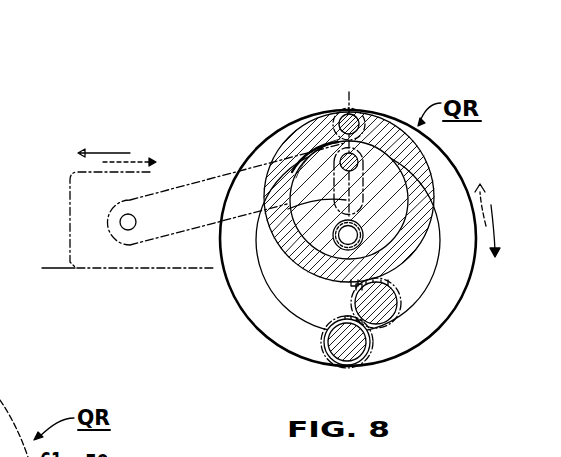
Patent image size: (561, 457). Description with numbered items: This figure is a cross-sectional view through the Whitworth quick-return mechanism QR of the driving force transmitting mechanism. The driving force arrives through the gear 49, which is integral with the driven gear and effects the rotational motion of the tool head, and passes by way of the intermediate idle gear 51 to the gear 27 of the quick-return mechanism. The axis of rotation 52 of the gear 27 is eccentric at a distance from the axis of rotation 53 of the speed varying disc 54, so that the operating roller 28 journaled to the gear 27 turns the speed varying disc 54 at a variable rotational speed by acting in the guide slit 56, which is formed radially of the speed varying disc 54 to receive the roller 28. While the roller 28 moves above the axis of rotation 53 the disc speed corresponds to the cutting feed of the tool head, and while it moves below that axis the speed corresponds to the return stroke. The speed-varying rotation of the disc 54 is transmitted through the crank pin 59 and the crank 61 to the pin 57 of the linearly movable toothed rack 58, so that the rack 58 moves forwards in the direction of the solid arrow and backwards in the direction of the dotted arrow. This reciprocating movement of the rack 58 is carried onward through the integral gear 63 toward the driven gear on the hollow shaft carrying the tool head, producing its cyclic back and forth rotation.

The gear 27 is at (412, 242).
The operating roller 28 is at (349, 112).
The gear 49 is at (354, 360).
The intermediate idle gear 51 is at (392, 319).
The axis of rotation 52 is at (348, 199).
The axis of rotation 53 is at (347, 237).
The speed varying disc 54 is at (447, 167).
The guide slit 56 is at (313, 131).
The pin 57 is at (134, 229).
The toothed rack 58 is at (78, 229).
The crank pin 59 is at (356, 161).
The crank 61 is at (217, 179).
The integral gear 63 is at (13, 411).